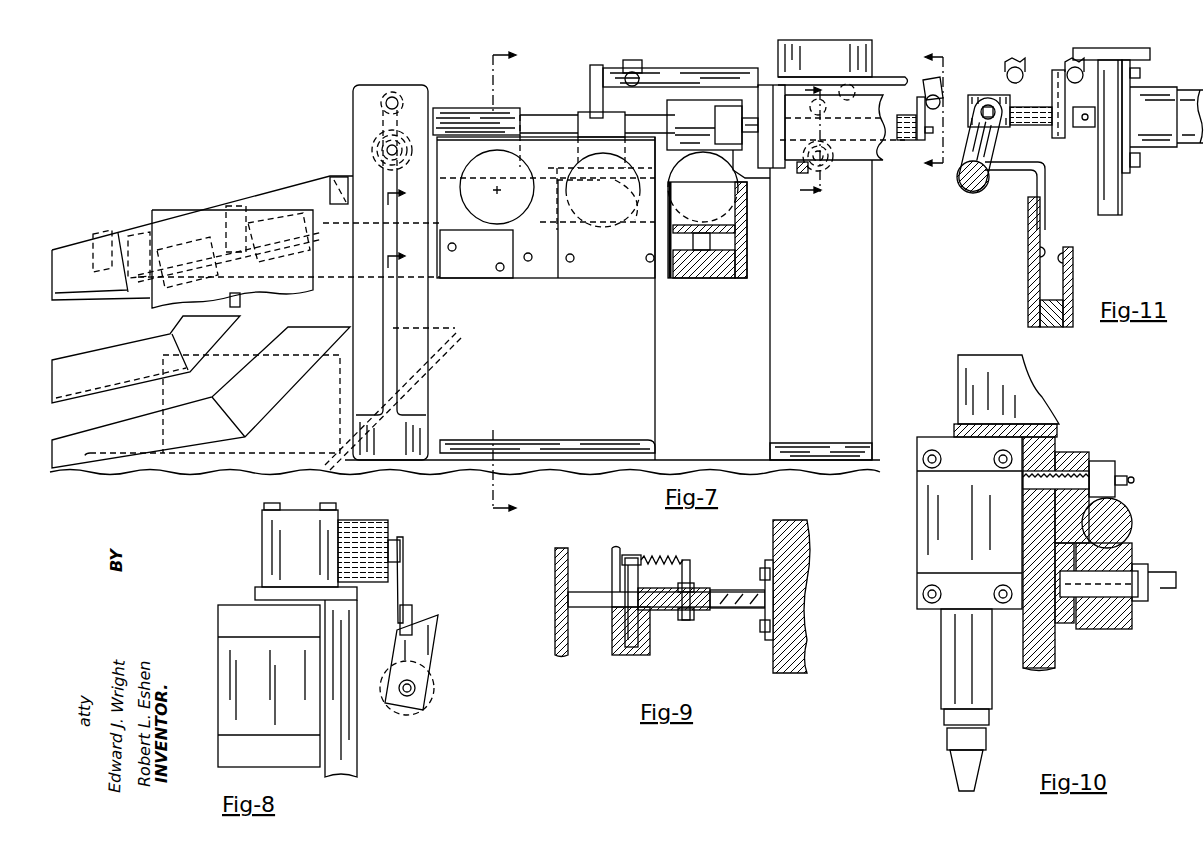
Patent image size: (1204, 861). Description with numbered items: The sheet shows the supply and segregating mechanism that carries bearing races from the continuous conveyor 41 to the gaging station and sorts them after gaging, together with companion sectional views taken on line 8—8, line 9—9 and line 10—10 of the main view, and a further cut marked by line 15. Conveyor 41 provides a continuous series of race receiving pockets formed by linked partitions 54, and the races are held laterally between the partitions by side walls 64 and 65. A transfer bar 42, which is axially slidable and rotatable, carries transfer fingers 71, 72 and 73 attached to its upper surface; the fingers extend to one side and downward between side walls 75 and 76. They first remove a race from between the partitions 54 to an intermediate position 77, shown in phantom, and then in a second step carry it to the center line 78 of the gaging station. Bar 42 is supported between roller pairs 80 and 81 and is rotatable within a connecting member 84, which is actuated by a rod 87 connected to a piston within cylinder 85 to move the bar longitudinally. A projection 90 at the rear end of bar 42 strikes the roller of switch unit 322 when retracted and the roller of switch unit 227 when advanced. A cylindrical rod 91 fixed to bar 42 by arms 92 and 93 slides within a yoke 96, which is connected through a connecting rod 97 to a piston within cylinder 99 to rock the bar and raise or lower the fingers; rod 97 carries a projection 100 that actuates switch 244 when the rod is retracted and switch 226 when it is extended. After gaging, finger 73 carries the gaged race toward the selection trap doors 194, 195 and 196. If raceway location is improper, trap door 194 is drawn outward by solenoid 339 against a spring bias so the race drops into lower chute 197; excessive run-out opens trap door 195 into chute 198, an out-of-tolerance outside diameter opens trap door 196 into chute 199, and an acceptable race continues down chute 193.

In FIG. 7, the section line 8— 8 is at (927, 111).
In FIG. 7, the section line 9— 9 is at (402, 226).
In FIG. 7, the section line 10— 10 is at (799, 140).
In FIG. 7, the section line 15- 15 is at (516, 283).
In FIG. 7, the conveyor 41 is at (712, 252).
In FIG. 7, the transfer bar 42 is at (505, 110).
In FIG. 11, the transfer bar 42 is at (981, 192).
In FIG. 8, the transfer bar 42 is at (430, 694).
In FIG. 10, the transfer bar 42 is at (1118, 517).
In FIG. 7, the partitions 54 is at (728, 216).
In FIG. 7, the side wall 64 is at (737, 246).
In FIG. 7, the side wall 65 is at (692, 278).
In FIG. 7, the transfer finger 71 is at (752, 171).
In FIG. 7, the transfer finger 72 is at (618, 205).
In FIG. 11, the transfer finger 72 is at (1030, 163).
In FIG. 7, the transfer finger 73 is at (596, 191).
In FIG. 11, the side wall 75 is at (1030, 262).
In FIG. 7, the side wall 76 is at (654, 298).
In FIG. 11, the side wall 76 is at (1075, 262).
In FIG. 7, the intermediate position 77 is at (620, 232).
In FIG. 7, the center line of the gaging station 78 is at (496, 189).
In FIG. 7, the roller pair 80 is at (372, 150).
In FIG. 7, the roller pair 81 is at (826, 108).
In FIG. 10, the roller pair 81 is at (1105, 468).
In FIG. 7, the connecting member 84 is at (670, 108).
In FIG. 7, the cylinder 85 is at (873, 150).
In FIG. 8, the cylinder 85 is at (240, 660).
In FIG. 10, the cylinder 85 is at (936, 543).
In FIG. 7, the rod 87 is at (750, 123).
In FIG. 7, the projection 90 is at (914, 106).
In FIG. 8, the projection 90 is at (425, 656).
In FIG. 7, the cylindrical rod 91 is at (643, 70).
In FIG. 7, the arm 92 is at (591, 95).
In FIG. 11, the arm 92 is at (990, 140).
In FIG. 7, the arm 93 is at (766, 84).
In FIG. 7, the yoke 96 is at (630, 60).
In FIG. 11, the yoke 96 is at (1005, 106).
In FIG. 11, the connecting rod 97 is at (1082, 112).
In FIG. 11, the cylinder 99 is at (1158, 85).
In FIG. 11, the projection 100 is at (1055, 80).
In FIG. 7, the chute 193 is at (210, 196).
In FIG. 7, the trap door 194 is at (342, 186).
In FIG. 9, the trap door 194 is at (596, 598).
In FIG. 7, the trap door 195 is at (240, 214).
In FIG. 7, the trap door 196 is at (140, 234).
In FIG. 7, the lower chute 197 is at (448, 346).
In FIG. 7, the chute 198 is at (290, 326).
In FIG. 7, the chute 199 is at (236, 326).
In FIG. 11, the switch 226 is at (1012, 66).
In FIG. 7, the switch unit 227 is at (855, 87).
In FIG. 11, the switch 244 is at (1070, 66).
In FIG. 7, the switch unit 322 is at (940, 93).
In FIG. 8, the switch unit 322 is at (410, 545).
In FIG. 9, the solenoid 339 is at (760, 586).